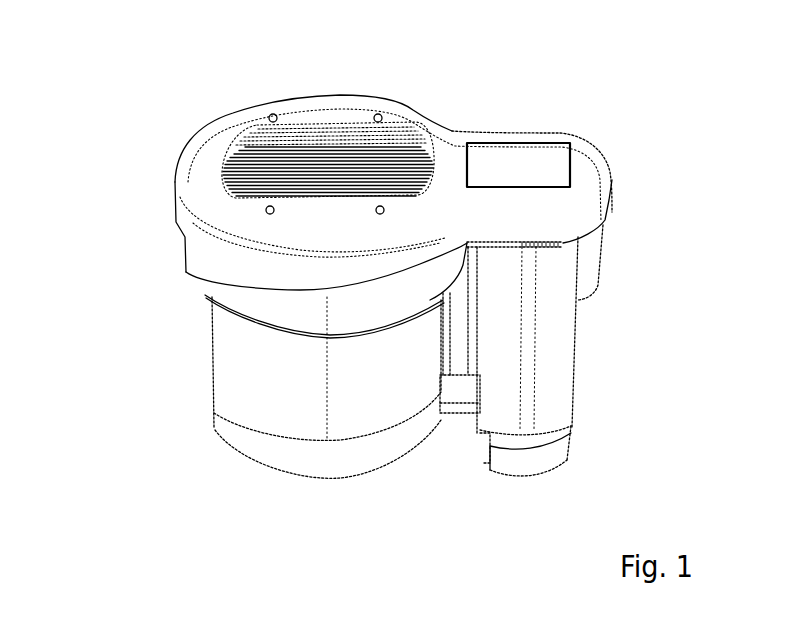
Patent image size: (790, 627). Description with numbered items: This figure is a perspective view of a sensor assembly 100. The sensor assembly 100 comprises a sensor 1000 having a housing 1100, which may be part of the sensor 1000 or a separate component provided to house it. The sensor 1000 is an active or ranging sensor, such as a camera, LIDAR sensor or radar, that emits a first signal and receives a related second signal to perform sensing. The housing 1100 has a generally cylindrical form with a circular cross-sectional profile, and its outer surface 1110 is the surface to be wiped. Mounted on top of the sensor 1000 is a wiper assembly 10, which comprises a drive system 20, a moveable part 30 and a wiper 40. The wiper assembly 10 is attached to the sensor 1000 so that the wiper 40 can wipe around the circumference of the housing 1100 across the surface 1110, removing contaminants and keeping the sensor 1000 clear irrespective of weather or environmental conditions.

The sensor assembly 100 is at (128, 86).
The wiper assembly 10 is at (153, 189).
The drive system 20 is at (623, 265).
The moveable part 30 is at (430, 281).
The wiper 40 is at (468, 324).
The sensor 1000 is at (160, 309).
The housing 1100 is at (197, 371).
The surface 1110 is at (247, 397).